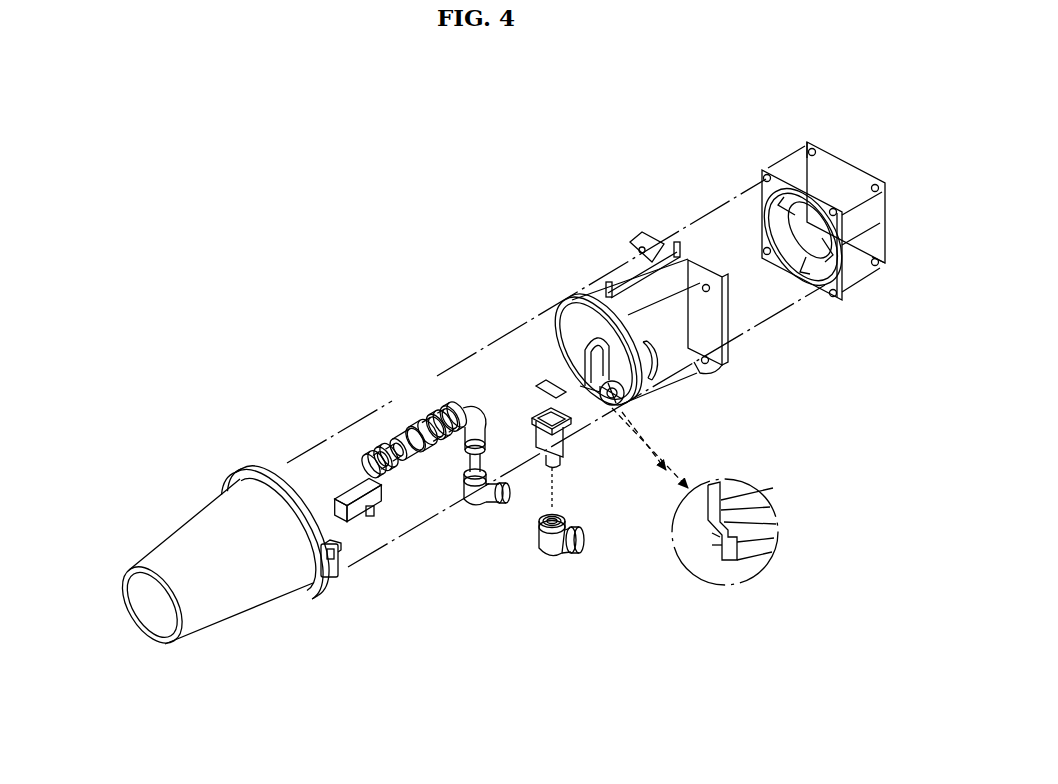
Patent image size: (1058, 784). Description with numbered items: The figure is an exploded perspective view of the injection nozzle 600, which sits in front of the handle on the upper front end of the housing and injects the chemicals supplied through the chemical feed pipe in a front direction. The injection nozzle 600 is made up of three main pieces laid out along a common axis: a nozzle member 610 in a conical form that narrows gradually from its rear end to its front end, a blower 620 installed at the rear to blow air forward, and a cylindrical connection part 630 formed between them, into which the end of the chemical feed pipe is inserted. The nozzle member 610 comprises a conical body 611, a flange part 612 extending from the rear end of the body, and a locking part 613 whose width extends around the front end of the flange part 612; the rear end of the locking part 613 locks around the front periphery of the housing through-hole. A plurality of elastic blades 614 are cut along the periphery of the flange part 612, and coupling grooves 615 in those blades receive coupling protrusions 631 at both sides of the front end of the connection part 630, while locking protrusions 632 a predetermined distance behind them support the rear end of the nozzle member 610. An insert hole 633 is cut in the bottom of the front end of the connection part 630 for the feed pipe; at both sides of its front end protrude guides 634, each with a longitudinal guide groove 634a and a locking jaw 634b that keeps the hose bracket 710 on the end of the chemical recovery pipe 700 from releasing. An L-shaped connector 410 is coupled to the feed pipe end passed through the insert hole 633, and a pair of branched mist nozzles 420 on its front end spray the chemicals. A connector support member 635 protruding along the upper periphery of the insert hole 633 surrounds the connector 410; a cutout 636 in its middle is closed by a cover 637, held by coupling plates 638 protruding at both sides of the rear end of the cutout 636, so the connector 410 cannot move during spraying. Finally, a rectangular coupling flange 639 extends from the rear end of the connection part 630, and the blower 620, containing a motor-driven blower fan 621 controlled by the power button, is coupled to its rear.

The injection nozzle 600 is at (117, 170).
The nozzle member 610 is at (170, 520).
The conical body 611 is at (240, 597).
The flange part 612 is at (328, 577).
The locking part 613 is at (245, 480).
The elastic blades 614 is at (340, 545).
The coupling grooves 615 is at (337, 568).
The blower 620 is at (790, 152).
The blower fan 621 is at (763, 196).
The connection part 630 is at (611, 240).
The coupling protrusions 631 is at (648, 345).
The locking protrusions 632 is at (722, 364).
The insert hole 633 is at (533, 400).
The guide 634 is at (553, 392).
The guide groove 634a is at (710, 535).
The locking jaw 634b is at (703, 552).
The connector support member 635 is at (578, 302).
The cutout 636 is at (580, 392).
The cover 637 is at (340, 489).
The coupling plates 638 is at (622, 405).
The coupling flange 639 is at (655, 237).
The connector 410 is at (467, 400).
The mist nozzles 420 is at (373, 447).
The chemical recovery pipe 700 is at (546, 548).
The hose bracket 710 is at (566, 442).